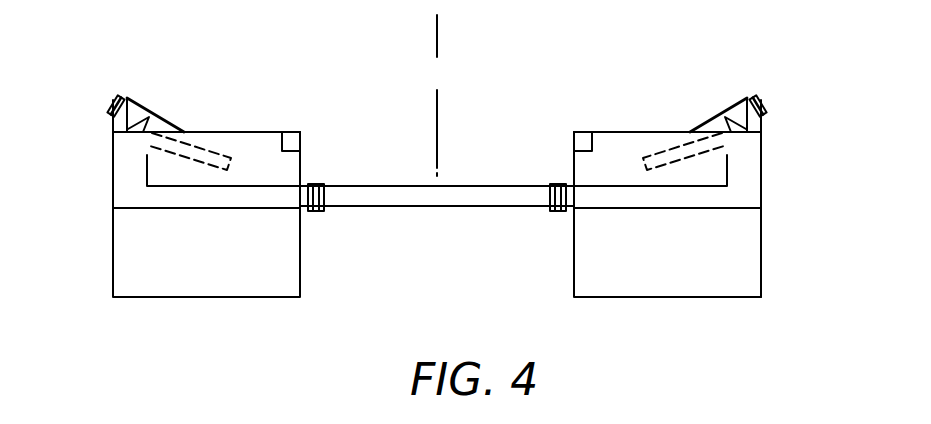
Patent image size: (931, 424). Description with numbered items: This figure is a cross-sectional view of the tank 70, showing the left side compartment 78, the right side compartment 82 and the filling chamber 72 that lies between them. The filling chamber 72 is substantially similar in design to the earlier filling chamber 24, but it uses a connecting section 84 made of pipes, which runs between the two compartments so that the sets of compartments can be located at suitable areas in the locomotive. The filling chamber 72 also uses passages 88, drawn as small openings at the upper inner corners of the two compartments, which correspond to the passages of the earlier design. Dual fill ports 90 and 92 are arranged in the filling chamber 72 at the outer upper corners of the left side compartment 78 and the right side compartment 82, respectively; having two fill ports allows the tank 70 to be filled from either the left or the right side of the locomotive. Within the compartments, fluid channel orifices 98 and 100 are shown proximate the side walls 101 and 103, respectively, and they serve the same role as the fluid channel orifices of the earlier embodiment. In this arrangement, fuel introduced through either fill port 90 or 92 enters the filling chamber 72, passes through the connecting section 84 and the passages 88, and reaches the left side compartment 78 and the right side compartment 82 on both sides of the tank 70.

The tank 70 is at (237, 31).
The filling chamber 72 is at (123, 203).
The filling chamber 24 is at (742, 203).
The left side compartment 78 is at (252, 150).
The right side compartment 82 is at (608, 142).
The connecting section 84 is at (460, 215).
The passages 88 is at (292, 137).
The fill port 90 is at (110, 105).
The fill port 92 is at (763, 109).
The fluid channel orifice 98 is at (135, 178).
The fluid channel orifice 100 is at (733, 178).
The side wall 101 is at (122, 204).
The side wall 103 is at (763, 190).